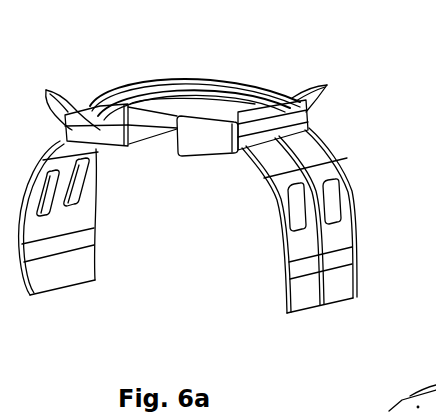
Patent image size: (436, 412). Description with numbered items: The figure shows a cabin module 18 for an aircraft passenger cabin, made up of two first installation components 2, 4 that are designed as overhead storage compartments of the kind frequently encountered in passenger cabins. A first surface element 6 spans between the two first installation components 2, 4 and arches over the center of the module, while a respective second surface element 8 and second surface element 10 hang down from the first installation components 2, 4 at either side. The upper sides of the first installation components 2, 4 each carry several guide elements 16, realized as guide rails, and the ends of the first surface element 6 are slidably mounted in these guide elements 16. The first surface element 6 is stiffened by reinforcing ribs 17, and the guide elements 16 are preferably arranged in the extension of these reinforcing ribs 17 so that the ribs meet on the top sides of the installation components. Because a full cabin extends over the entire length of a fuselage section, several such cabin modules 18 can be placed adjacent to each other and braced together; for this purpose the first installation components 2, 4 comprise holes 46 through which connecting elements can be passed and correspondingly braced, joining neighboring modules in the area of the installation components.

The first installation component 2 is at (103, 144).
The first installation component 4 is at (203, 143).
The first surface element 6 is at (187, 88).
The second surface element 8 is at (65, 269).
The second surface element 10 is at (336, 242).
The guide element 16 is at (231, 82).
The reinforcing rib 17 is at (155, 78).
The cabin module 18 is at (385, 403).
The hole 46 is at (47, 91).